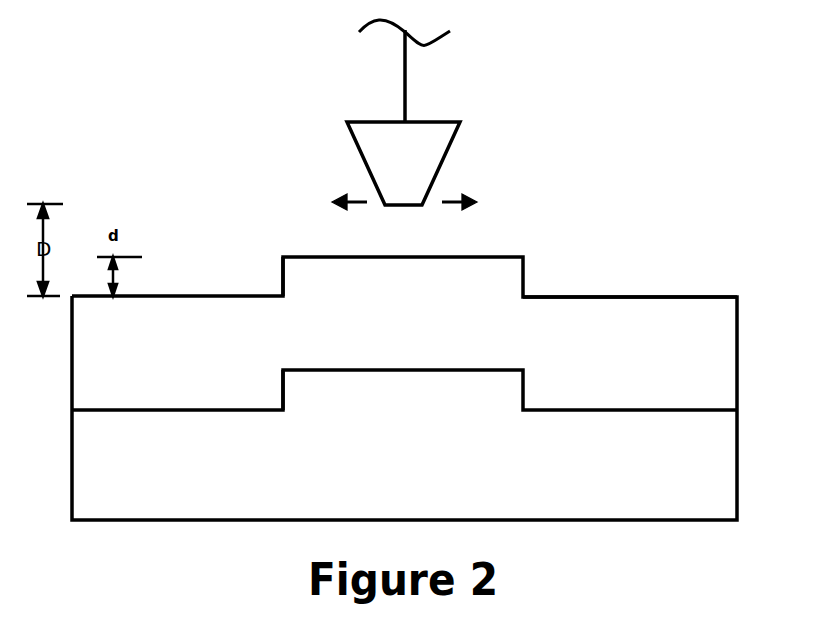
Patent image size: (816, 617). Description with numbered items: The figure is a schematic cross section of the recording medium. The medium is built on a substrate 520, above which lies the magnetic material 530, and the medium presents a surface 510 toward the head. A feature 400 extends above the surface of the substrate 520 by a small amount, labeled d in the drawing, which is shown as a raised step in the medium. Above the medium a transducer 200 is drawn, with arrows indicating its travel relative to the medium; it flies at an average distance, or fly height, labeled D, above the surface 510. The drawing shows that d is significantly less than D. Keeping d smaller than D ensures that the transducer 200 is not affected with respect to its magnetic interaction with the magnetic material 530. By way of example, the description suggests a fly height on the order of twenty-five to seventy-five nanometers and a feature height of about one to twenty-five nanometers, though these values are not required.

The transducer 200 is at (440, 163).
The feature 400 is at (345, 370).
The surface 510 is at (587, 300).
The substrate 520 is at (692, 479).
The magnetic material 530 is at (692, 364).